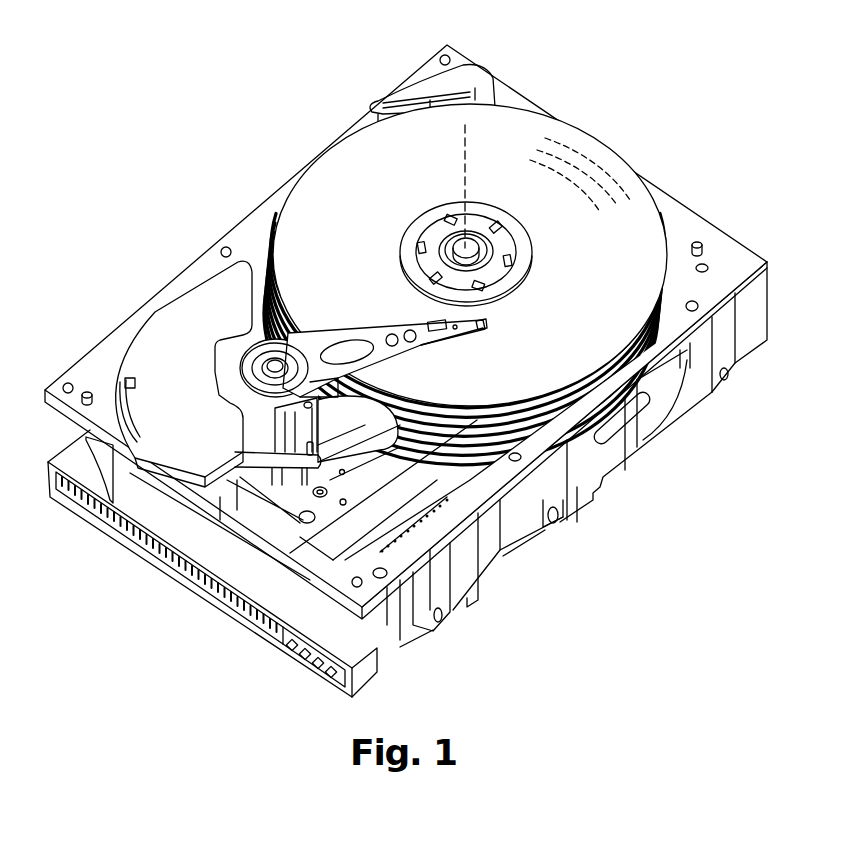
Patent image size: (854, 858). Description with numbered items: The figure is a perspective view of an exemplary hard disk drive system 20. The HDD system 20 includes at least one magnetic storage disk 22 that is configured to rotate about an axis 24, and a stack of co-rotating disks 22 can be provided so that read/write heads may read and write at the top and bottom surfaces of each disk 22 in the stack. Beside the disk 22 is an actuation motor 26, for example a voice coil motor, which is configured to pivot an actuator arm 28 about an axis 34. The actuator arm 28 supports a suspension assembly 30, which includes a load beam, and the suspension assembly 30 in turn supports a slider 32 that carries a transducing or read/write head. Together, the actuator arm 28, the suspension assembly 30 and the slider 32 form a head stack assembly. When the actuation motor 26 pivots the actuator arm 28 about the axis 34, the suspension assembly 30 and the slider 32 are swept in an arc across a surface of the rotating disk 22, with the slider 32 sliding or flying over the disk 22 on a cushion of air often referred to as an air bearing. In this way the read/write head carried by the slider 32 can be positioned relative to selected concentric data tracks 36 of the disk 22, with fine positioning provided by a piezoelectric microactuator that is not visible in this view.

The hard disk drive system 20 is at (520, 75).
The magnetic storage disk 22 is at (346, 172).
The axis 24 is at (464, 172).
The actuation motor 26 is at (161, 333).
The actuator arm 28 is at (340, 333).
The suspension assembly 30 is at (440, 333).
The slider 32 is at (487, 326).
The axis 34 is at (288, 258).
The concentric data tracks 36 is at (614, 183).